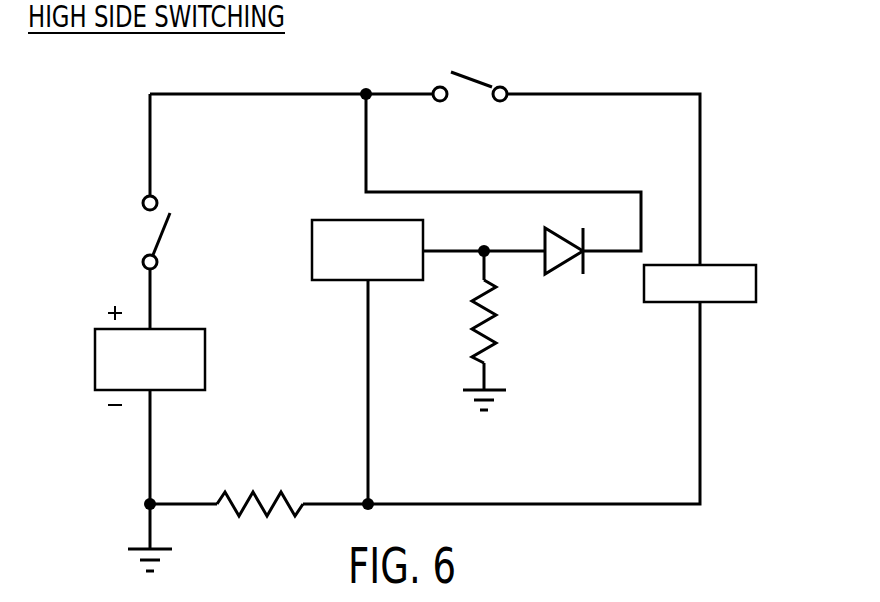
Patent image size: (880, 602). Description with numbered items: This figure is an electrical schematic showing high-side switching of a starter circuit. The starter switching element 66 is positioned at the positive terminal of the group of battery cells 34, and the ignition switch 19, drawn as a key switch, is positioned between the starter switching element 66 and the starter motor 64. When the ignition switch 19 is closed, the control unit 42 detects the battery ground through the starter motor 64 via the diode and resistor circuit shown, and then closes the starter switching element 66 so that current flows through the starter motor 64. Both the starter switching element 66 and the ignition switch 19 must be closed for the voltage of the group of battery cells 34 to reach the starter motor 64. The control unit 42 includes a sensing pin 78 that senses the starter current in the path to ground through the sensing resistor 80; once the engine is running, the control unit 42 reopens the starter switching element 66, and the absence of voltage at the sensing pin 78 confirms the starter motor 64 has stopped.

The ignition switch 19 is at (475, 78).
The starter switching element 66 is at (136, 228).
The group of battery cells 34 is at (95, 360).
The control unit 42 is at (327, 281).
The sensing pin 78 is at (368, 353).
The starter motor 64 is at (720, 265).
The sensing resistor 80 is at (267, 500).